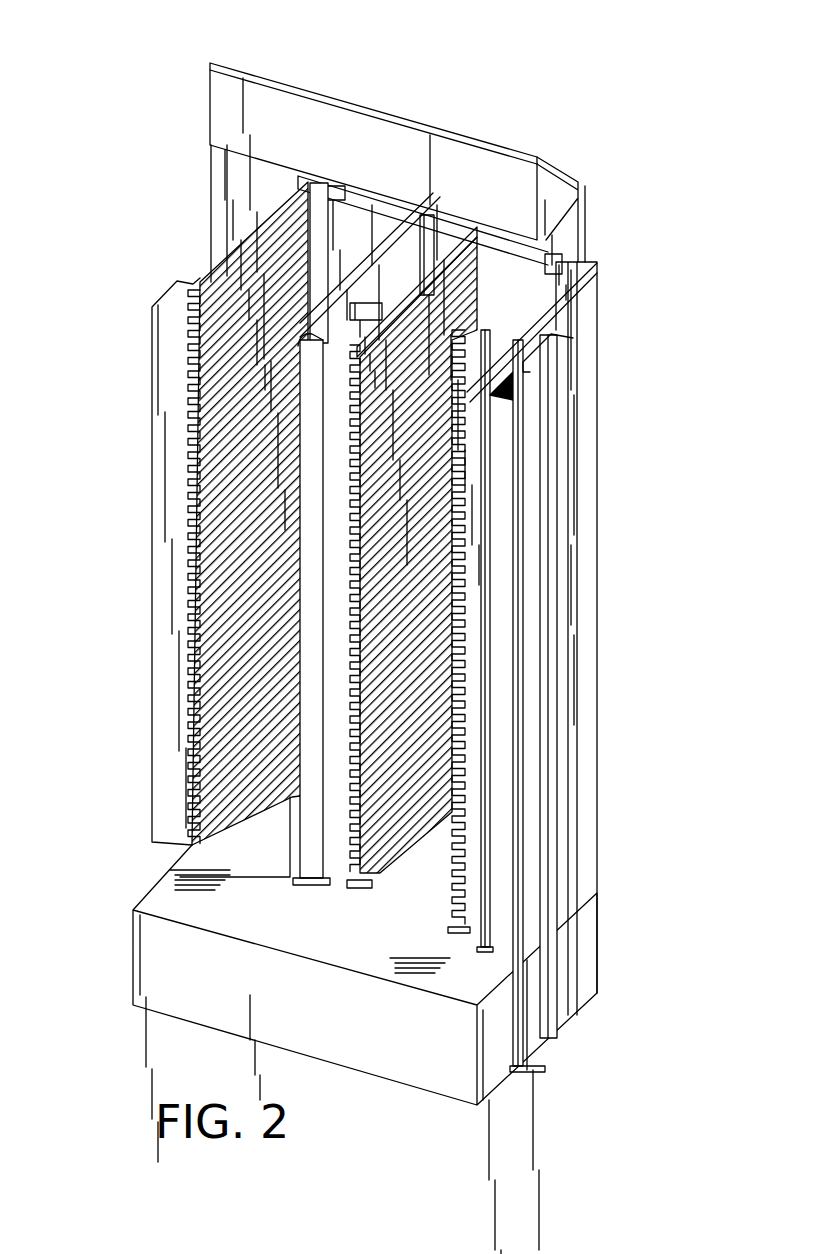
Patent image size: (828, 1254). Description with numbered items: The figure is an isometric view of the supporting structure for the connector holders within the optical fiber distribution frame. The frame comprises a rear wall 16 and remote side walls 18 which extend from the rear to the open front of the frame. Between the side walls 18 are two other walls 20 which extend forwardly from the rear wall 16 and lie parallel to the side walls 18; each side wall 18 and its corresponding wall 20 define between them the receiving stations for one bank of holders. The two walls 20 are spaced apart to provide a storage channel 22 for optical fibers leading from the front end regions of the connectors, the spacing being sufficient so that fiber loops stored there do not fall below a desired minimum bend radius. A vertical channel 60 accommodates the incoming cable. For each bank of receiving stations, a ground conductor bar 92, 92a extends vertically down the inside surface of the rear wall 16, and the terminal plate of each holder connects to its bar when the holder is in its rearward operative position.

The rear wall 16 is at (372, 195).
The side walls 18 is at (200, 275).
The walls 20 is at (500, 225).
The storage channel 22 is at (457, 222).
The vertical channel 60 is at (152, 327).
The ground conductor bar 92 is at (333, 193).
The ground conductor bar 92a is at (577, 237).